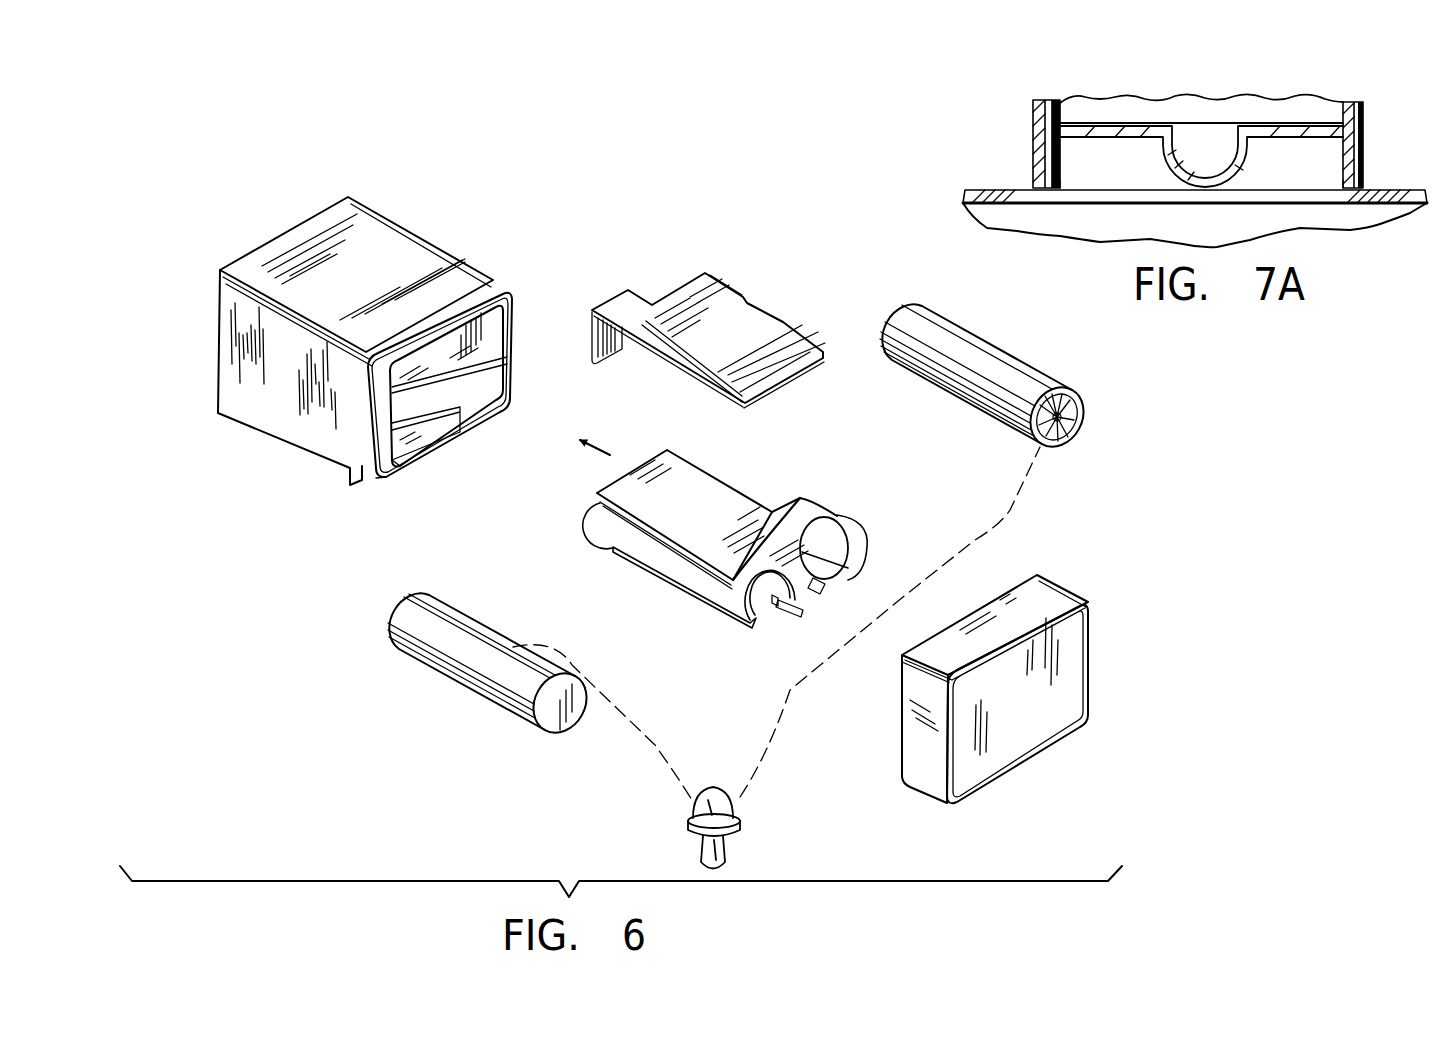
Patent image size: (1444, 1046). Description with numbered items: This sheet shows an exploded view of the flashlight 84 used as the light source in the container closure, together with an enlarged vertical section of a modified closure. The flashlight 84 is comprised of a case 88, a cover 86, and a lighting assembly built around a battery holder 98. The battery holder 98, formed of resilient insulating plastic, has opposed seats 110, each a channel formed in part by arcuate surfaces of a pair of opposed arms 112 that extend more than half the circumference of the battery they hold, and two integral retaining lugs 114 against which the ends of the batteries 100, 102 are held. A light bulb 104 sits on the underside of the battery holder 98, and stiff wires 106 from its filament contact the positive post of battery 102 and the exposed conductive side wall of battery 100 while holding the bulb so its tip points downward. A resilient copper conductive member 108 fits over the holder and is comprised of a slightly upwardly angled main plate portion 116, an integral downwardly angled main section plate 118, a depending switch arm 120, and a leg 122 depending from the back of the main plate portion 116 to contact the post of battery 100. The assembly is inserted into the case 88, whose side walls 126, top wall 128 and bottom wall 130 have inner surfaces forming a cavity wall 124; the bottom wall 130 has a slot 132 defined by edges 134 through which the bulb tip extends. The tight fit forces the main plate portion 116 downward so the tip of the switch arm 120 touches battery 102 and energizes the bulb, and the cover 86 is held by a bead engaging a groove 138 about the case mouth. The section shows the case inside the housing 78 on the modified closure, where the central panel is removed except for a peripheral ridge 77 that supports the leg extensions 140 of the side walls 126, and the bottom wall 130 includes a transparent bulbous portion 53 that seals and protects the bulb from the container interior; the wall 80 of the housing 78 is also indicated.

In FIG. 7A, the bulbous portion 53 is at (1188, 182).
In FIG. 7A, the peripheral ridge 77 is at (1057, 193).
In FIG. 7A, the housing 78 is at (1173, 155).
In FIG. 7A, the housing wall 80 is at (1040, 133).
In FIG. 6, the flashlight 84 is at (718, 425).
In FIG. 6, the cover 86 is at (1070, 667).
In FIG. 6, the case 88 is at (395, 339).
In FIG. 6, the battery holder 98 is at (718, 565).
In FIG. 6, the battery 100 is at (452, 667).
In FIG. 6, the battery 102 is at (962, 400).
In FIG. 6, the light bulb 104 is at (743, 825).
In FIG. 6, the wires 106 is at (637, 728).
In FIG. 6, the conductive member 108 is at (700, 307).
In FIG. 6, the seats 110 is at (836, 583).
In FIG. 6, the opposed arms 112 is at (592, 510).
In FIG. 6, the retaining lugs 114 is at (795, 612).
In FIG. 6, the main plate portion 116 is at (670, 333).
In FIG. 6, the main section plate 118 is at (767, 375).
In FIG. 6, the switch arm 120 is at (767, 313).
In FIG. 6, the leg 122 is at (617, 347).
In FIG. 6, the cavity wall 124 is at (492, 348).
In FIG. 6, the side walls 126 is at (283, 433).
In FIG. 7A, the side walls 126 is at (1052, 103).
In FIG. 6, the top wall 128 is at (400, 243).
In FIG. 6, the bottom wall 130 is at (403, 462).
In FIG. 7A, the bottom wall 130 is at (1083, 140).
In FIG. 6, the bottom wall slot 132 is at (460, 430).
In FIG. 6, the edges 134 is at (440, 422).
In FIG. 6, the groove 138 is at (480, 287).
In FIG. 7A, the leg extensions 140 is at (1050, 173).